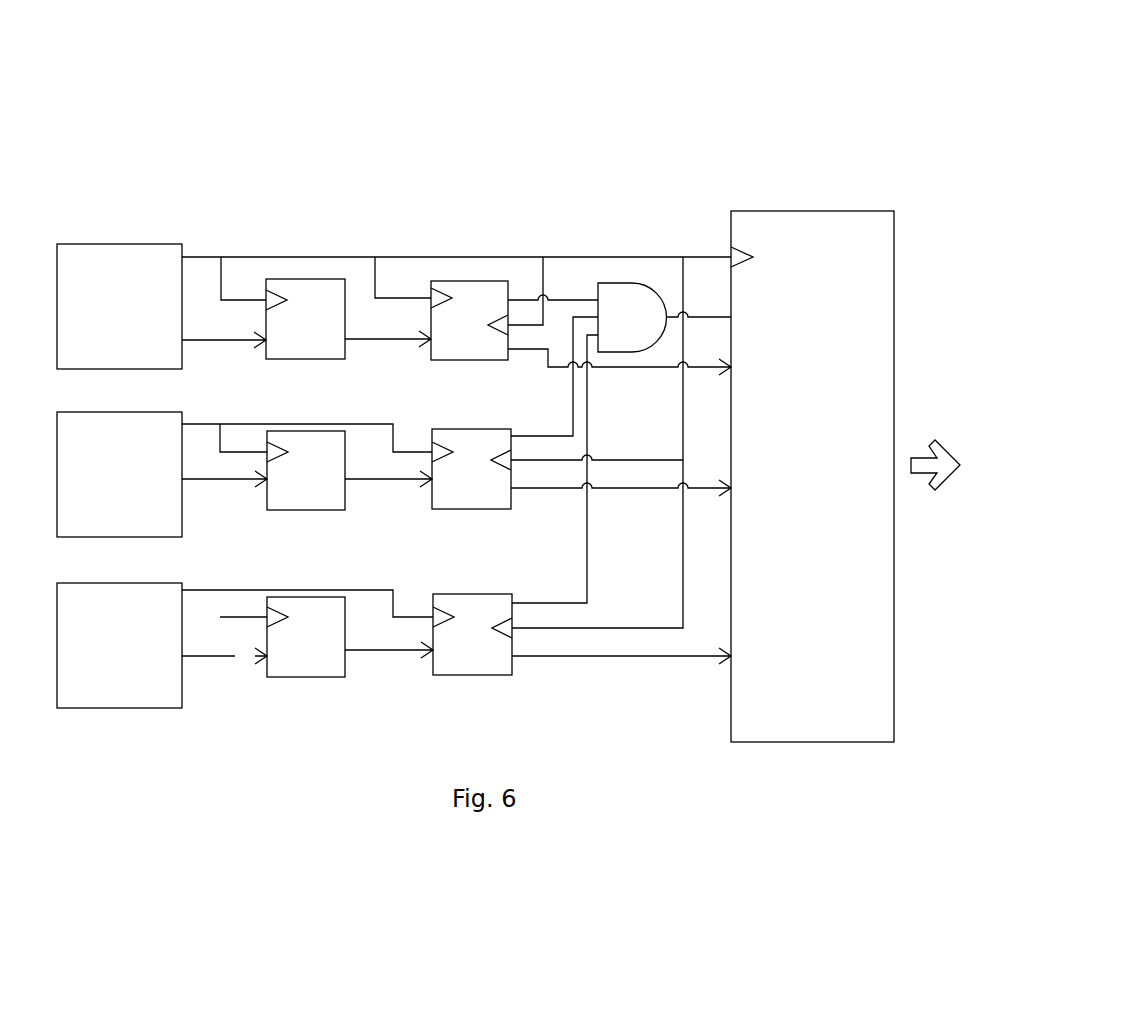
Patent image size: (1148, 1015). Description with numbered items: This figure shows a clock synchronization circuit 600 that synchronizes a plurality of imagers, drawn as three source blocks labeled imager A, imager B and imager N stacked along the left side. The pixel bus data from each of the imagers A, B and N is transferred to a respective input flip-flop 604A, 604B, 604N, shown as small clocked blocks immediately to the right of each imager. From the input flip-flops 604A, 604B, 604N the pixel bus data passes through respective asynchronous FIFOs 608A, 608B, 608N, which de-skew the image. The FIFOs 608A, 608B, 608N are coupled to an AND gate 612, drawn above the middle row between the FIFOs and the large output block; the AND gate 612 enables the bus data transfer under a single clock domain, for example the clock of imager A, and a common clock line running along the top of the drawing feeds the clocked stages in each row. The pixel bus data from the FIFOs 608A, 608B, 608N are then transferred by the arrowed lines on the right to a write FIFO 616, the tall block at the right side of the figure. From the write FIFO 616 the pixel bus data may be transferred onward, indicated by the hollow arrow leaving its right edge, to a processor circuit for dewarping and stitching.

The clock synchronization circuit 600 is at (615, 142).
The imager A is at (136, 208).
The imager B is at (162, 393).
The imager N is at (120, 708).
The input flip-flop 604A is at (339, 235).
The input flip-flop 604B is at (342, 407).
The input flip-flop 604N is at (337, 573).
The asynchronous FIFO 608A is at (490, 236).
The asynchronous FIFO 608B is at (482, 413).
The asynchronous FIFO 608N is at (508, 563).
The AND gate 612 is at (641, 235).
The write FIFO 616 is at (786, 793).